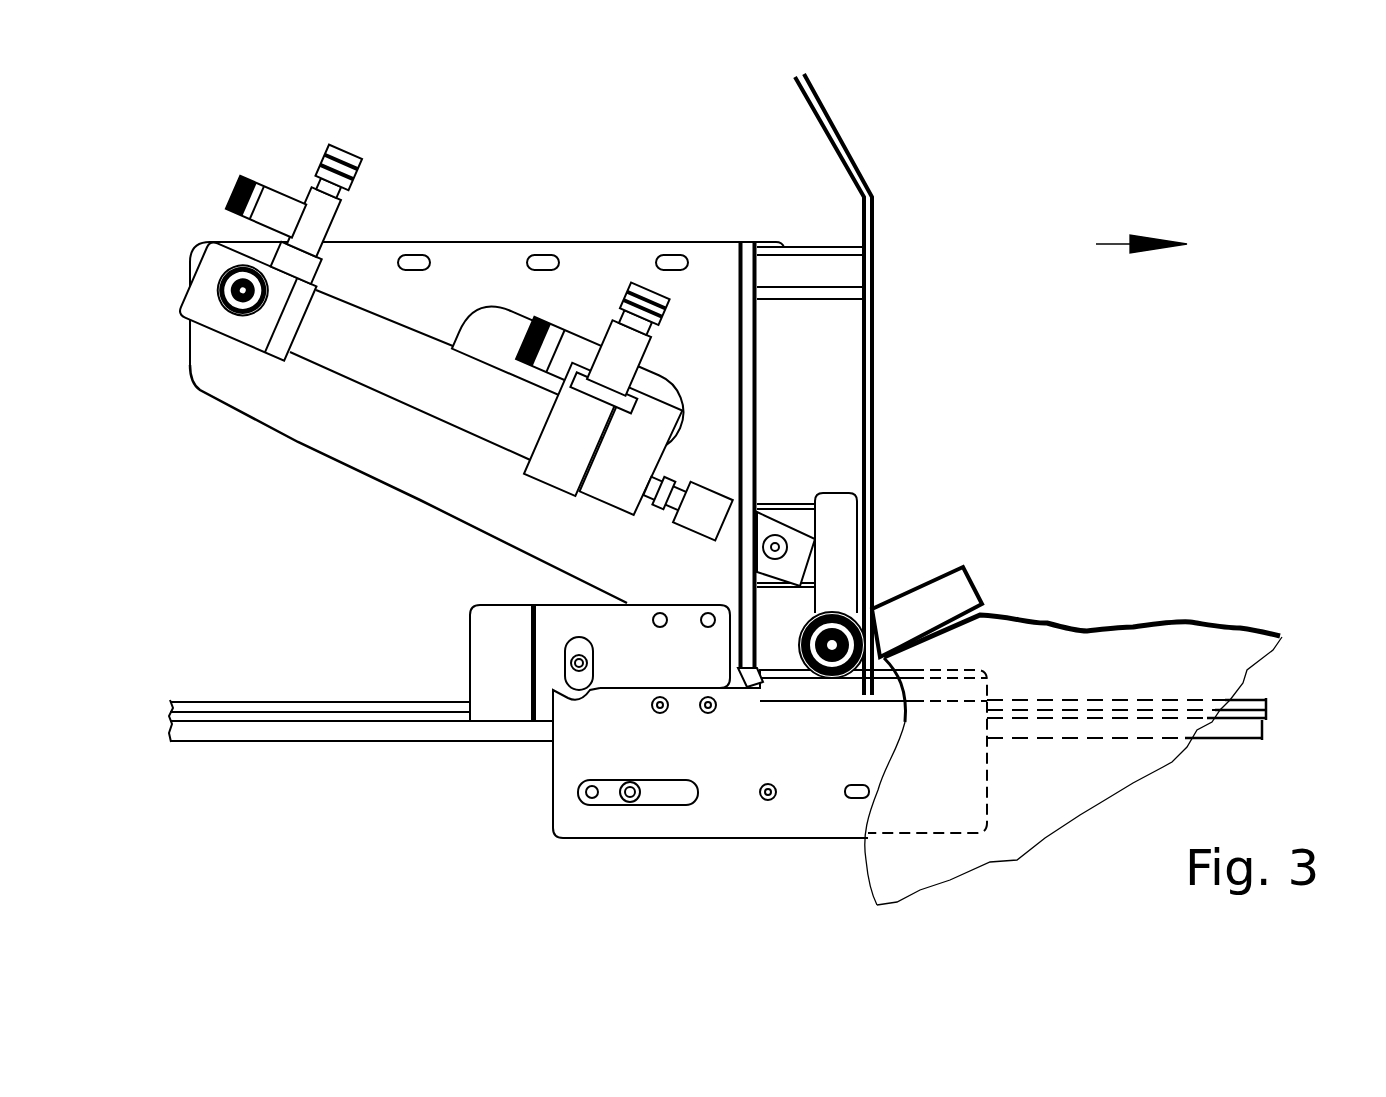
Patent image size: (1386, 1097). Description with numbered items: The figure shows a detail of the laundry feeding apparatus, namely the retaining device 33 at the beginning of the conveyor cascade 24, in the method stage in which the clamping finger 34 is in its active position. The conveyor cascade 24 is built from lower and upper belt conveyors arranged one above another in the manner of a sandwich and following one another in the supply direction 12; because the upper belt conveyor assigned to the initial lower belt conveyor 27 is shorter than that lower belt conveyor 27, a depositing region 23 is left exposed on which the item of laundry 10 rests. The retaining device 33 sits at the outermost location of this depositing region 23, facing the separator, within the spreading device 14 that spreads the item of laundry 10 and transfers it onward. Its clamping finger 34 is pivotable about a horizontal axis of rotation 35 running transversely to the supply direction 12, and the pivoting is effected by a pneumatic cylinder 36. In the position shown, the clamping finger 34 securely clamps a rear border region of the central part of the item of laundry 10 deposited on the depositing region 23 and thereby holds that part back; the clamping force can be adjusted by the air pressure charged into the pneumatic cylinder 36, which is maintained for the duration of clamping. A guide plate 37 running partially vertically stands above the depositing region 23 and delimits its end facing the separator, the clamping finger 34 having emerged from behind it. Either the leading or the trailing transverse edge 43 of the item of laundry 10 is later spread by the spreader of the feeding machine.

The item of laundry 10 is at (1053, 810).
The supply direction 12 is at (1124, 243).
The spreading device 14 is at (1199, 379).
The depositing region 23 is at (1058, 563).
The conveyor cascade 24 is at (1310, 678).
The lower belt conveyor 27 is at (1247, 704).
The retaining device 33 is at (627, 182).
The clamping finger 34 is at (913, 606).
The axis of rotation 35 is at (830, 677).
The pneumatic cylinder 36 is at (344, 357).
The guide plate 37 is at (874, 334).
The transverse edge 43 is at (863, 873).